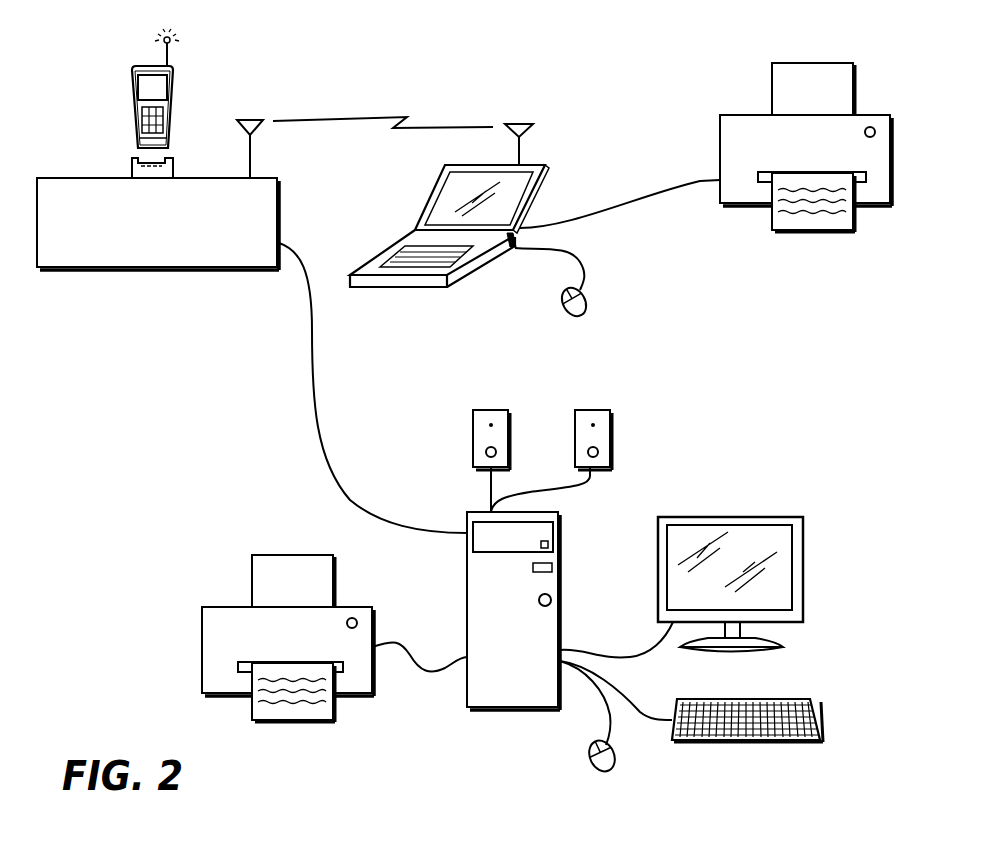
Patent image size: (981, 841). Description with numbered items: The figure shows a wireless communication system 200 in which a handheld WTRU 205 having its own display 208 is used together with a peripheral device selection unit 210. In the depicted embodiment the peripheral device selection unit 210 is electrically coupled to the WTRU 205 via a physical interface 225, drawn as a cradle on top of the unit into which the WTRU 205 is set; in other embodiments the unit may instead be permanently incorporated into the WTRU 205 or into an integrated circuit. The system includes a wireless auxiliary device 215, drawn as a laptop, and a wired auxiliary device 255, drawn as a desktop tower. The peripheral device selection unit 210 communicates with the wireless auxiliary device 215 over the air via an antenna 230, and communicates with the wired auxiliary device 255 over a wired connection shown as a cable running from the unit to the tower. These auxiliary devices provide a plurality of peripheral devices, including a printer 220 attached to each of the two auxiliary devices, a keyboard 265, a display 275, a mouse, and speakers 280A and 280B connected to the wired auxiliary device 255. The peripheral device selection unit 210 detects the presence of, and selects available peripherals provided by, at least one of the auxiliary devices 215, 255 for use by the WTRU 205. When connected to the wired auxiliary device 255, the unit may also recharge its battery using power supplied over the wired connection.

The wireless communication system 200 is at (78, 27).
The WTRU 205 is at (177, 80).
The display 208 is at (138, 88).
The peripheral device selection unit 210 is at (280, 200).
The wireless auxiliary device 215 is at (537, 185).
The printer 220 is at (731, 115).
The physical interface 225 is at (126, 153).
The antenna 230 is at (250, 120).
The wired auxiliary device 255 is at (498, 710).
The keyboard 265 is at (820, 722).
The display 275 is at (803, 570).
The speaker 280A is at (473, 443).
The speaker 280B is at (610, 443).